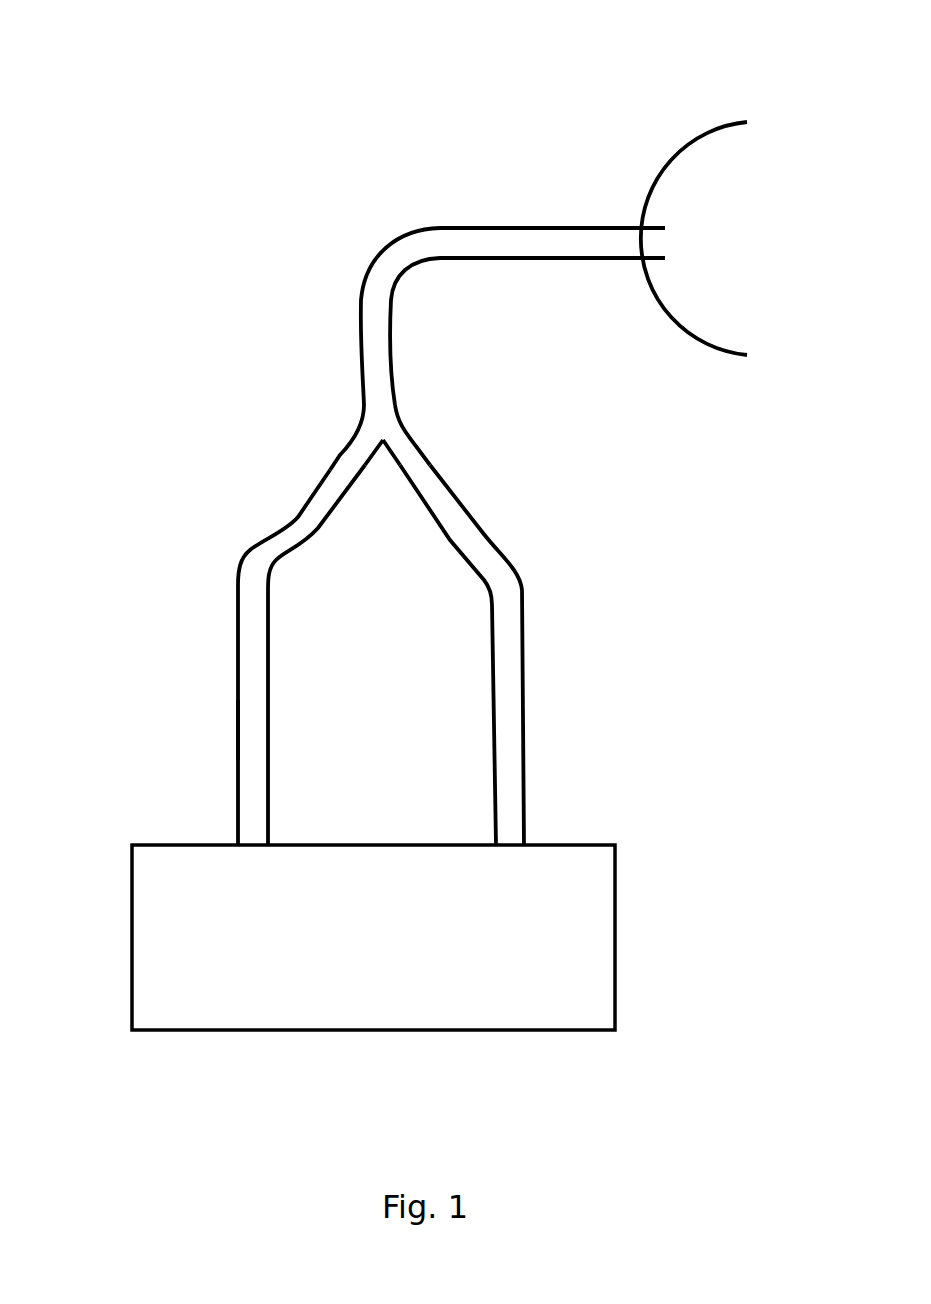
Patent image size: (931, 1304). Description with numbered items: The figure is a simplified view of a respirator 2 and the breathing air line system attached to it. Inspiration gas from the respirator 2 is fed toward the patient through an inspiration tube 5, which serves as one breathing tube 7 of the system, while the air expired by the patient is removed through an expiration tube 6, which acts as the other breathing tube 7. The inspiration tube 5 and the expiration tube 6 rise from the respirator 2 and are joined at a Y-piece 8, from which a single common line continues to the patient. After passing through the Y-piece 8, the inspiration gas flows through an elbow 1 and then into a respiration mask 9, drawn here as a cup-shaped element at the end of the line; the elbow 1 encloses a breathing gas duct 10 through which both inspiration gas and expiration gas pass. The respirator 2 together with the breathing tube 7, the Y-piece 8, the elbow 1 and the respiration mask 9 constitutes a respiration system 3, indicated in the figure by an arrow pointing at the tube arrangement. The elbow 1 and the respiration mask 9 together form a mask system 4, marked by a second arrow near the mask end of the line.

The elbow 1 is at (378, 458).
The respirator 2 is at (400, 963).
The respiration system 3 is at (117, 677).
The mask system 4 is at (664, 188).
The inspiration tube 5 is at (250, 598).
The expiration tube 6 is at (515, 715).
The breathing tube 7 is at (378, 641).
The Y-piece 8 is at (383, 398).
The respiration mask 9 is at (713, 130).
The breathing gas duct 10 is at (367, 300).